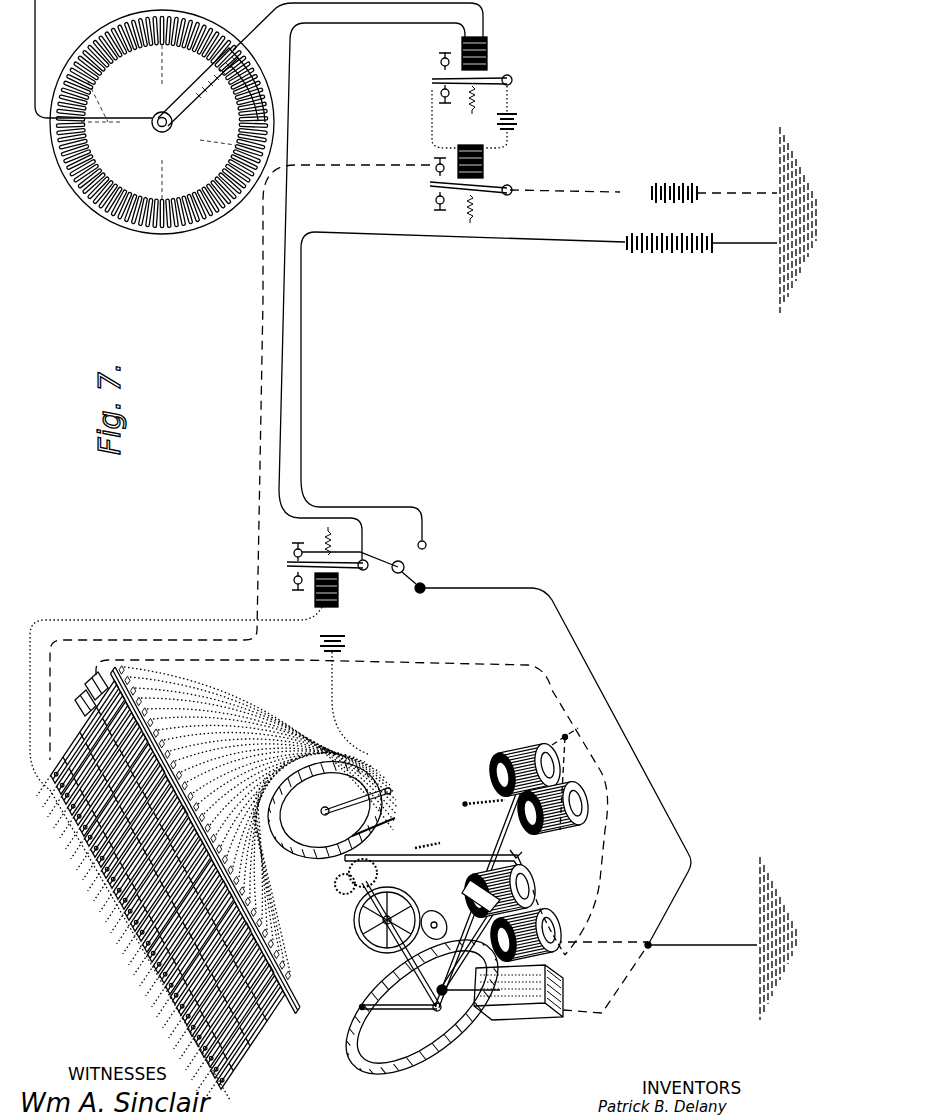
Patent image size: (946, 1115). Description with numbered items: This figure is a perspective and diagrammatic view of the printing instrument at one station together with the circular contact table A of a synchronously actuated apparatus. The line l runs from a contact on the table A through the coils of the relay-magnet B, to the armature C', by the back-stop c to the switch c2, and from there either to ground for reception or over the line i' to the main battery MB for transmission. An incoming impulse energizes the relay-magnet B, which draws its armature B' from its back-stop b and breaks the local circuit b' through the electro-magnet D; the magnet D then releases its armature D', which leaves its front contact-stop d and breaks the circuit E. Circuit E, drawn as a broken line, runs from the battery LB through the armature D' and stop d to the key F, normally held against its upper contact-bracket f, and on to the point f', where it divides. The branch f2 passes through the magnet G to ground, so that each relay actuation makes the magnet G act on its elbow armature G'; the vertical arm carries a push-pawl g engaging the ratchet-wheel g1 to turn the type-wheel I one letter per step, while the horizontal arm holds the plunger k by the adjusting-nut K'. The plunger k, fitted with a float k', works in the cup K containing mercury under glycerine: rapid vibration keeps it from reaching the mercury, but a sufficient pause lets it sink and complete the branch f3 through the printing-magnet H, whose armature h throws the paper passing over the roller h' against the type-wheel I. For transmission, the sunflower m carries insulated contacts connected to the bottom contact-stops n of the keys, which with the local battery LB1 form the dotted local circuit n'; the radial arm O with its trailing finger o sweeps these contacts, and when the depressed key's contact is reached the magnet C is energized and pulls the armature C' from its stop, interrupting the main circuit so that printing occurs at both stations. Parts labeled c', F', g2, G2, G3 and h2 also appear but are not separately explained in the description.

The circular table of contacts A is at (164, 132).
The back-stop c is at (211, 87).
The line l is at (396, 474).
The relay-magnet B is at (486, 53).
The armature of relay-magnet B' is at (461, 102).
The local circuit b' is at (428, 85).
The back-stop b is at (447, 100).
The electro-magnet D is at (480, 161).
The armature of electro-magnet D' is at (458, 202).
The front contact-stop d is at (436, 166).
The circuit E is at (413, 582).
The circuit wire i' is at (539, 384).
The battery LB is at (674, 179).
The battery MB is at (669, 256).
The magnet C is at (307, 590).
The armature C' is at (327, 561).
The contact stop c' is at (335, 565).
The switch c2 is at (407, 580).
The local battery LB1 is at (322, 643).
The local circuit n' is at (213, 789).
The bottom contact-stops n is at (207, 848).
The key F is at (161, 891).
The key F' is at (75, 710).
The upper contact-bracket f is at (84, 686).
The dividing point f' is at (571, 729).
The branch circuit f2 is at (549, 911).
The branch circuit f3 is at (557, 783).
The sunflower m is at (324, 810).
The trailing finger o is at (392, 792).
The radial arm O is at (379, 825).
The push-pawl g is at (346, 896).
The ratchet-wheel g1 is at (347, 873).
The shaft g2 is at (424, 833).
The magnet G is at (513, 913).
The elbow armature G' is at (434, 912).
The magnet core G2 is at (506, 915).
The armature stop G3 is at (519, 844).
The printing-magnet H is at (539, 785).
The armature of printing-magnet h is at (483, 884).
The roller h' is at (434, 916).
The contact h2 is at (482, 789).
The type-wheel I is at (394, 944).
The cup K is at (452, 1007).
The adjusting-nut K' is at (399, 1015).
The plunger k is at (468, 1002).
The float k' is at (518, 1025).